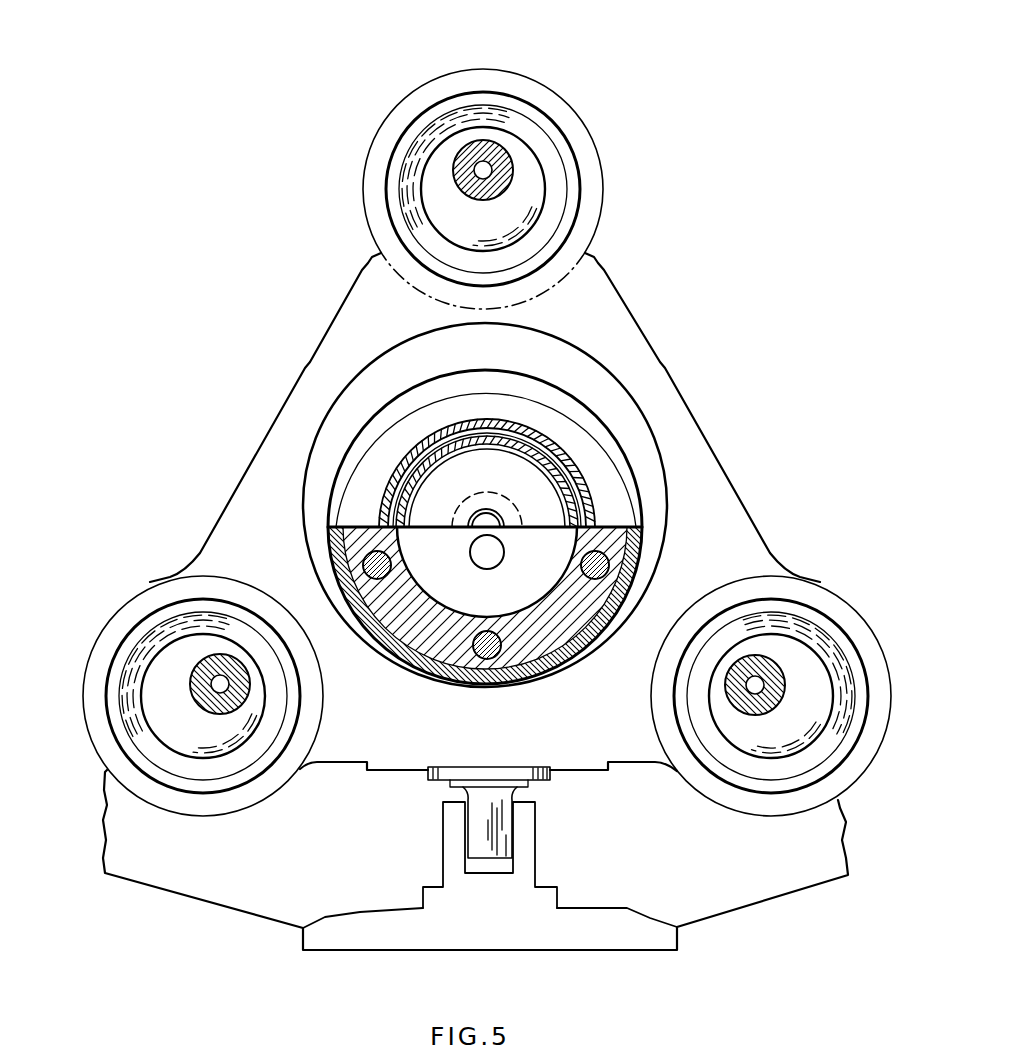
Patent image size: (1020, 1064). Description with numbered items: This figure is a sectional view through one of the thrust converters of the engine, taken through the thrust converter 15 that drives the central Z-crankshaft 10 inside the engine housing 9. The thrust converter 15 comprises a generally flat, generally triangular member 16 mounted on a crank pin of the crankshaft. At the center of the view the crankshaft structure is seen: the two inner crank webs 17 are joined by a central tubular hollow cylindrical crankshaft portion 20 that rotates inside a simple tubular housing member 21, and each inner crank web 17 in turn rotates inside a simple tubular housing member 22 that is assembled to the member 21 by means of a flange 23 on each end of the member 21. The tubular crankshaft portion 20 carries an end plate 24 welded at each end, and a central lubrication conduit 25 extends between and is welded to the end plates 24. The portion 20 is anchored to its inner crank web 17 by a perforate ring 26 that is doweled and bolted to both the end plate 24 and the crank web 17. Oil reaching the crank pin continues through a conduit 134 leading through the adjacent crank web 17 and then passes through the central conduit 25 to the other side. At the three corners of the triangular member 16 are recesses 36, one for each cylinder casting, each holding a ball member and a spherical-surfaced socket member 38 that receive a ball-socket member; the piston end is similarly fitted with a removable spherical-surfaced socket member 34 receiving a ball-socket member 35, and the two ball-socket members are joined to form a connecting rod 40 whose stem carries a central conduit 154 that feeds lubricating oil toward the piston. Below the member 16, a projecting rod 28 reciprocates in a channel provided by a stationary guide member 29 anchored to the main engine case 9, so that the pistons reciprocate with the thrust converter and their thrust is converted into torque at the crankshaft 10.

The engine housing 9 is at (186, 893).
The crankshaft 10 is at (656, 571).
The thrust converter 15 is at (640, 288).
The triangular member 16 is at (648, 353).
The inner crank web 17 is at (477, 603).
The tubular crankshaft portion 20 is at (428, 460).
The tubular housing member 21 is at (571, 450).
The tubular housing member 22 is at (488, 367).
The flange 23 is at (451, 406).
The end plate 24 is at (544, 500).
The central lubrication conduit 25 is at (463, 529).
The perforate ring 26 is at (507, 429).
The projecting rod 28 is at (500, 828).
The stationary guide member 29 is at (443, 860).
The spherical-surfaced socket member 34 is at (553, 214).
The ball-socket member 35 is at (432, 226).
The recess 36 is at (578, 191).
The spherical-surfaced socket member 38 is at (590, 159).
The connecting rod 40 is at (504, 157).
The conduit 134 is at (500, 563).
The conduit 154 is at (476, 169).